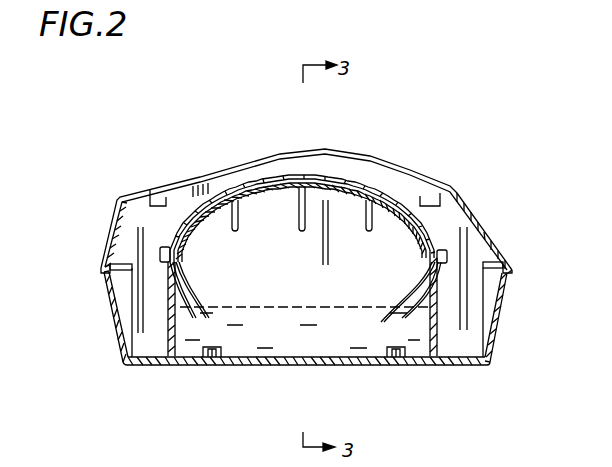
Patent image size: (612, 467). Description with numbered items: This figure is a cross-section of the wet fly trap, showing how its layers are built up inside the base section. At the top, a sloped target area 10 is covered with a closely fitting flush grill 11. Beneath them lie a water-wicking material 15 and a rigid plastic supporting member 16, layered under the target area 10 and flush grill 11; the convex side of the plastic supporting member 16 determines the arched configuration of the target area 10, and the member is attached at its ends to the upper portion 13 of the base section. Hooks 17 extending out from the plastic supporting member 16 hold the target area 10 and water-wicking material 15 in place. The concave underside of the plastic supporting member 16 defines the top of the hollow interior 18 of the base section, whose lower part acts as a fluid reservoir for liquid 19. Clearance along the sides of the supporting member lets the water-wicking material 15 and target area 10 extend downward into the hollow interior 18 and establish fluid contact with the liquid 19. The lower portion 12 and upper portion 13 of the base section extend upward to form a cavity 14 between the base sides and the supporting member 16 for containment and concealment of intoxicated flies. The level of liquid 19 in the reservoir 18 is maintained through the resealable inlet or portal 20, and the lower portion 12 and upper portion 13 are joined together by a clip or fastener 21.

The target area 10 is at (278, 183).
The flush grill 11 is at (240, 185).
The lower portion of the base section 12 is at (113, 320).
The upper portion of the base section 13 is at (112, 222).
The cavity 14 is at (148, 283).
The water-wicking material 15 is at (335, 170).
The rigid plastic supporting member 16 is at (385, 176).
The hooks 17 is at (163, 250).
The hollow interior 18 is at (293, 277).
The liquid 19 is at (325, 338).
The resealable inlet or portal 20 is at (210, 362).
The clip or fastener 21 is at (103, 265).